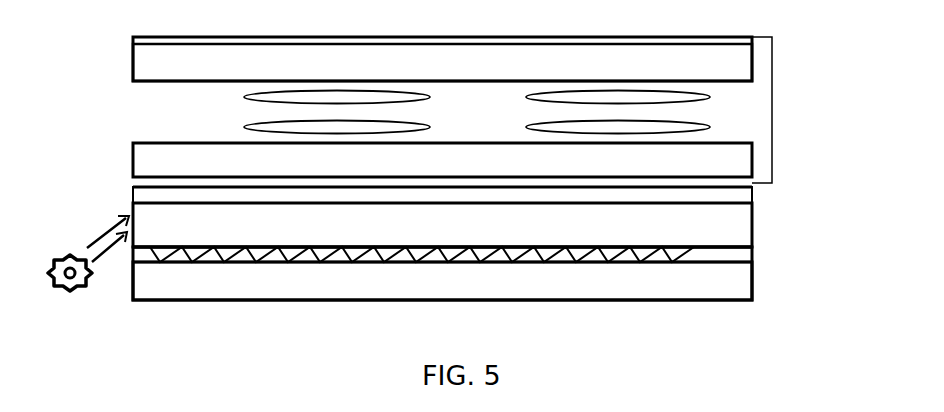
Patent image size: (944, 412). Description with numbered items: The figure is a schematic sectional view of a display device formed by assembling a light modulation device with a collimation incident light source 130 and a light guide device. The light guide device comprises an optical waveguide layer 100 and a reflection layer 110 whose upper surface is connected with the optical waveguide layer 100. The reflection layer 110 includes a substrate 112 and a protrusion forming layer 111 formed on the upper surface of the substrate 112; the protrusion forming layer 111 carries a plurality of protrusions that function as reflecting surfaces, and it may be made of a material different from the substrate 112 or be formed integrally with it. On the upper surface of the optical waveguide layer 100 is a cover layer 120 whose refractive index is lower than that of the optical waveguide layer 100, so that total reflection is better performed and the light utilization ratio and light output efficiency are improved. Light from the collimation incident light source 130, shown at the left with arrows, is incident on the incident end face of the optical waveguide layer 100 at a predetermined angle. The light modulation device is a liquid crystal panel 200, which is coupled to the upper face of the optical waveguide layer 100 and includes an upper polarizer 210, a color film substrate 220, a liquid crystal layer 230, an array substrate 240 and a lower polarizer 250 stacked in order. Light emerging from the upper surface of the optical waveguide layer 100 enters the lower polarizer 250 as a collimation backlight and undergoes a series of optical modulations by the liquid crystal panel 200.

The optical waveguide layer 100 is at (745, 232).
The reflection layer 110 is at (828, 243).
The protrusion forming layer 111 is at (745, 257).
The substrate 112 is at (745, 287).
The cover layer 120 is at (745, 198).
The collimation incident light source 130 is at (52, 256).
The liquid crystal panel 200 is at (772, 110).
The upper polarizer 210 is at (136, 42).
The color film substrate 220 is at (137, 66).
The liquid crystal layer 230 is at (146, 115).
The array substrate 240 is at (141, 161).
The lower polarizer 250 is at (138, 181).